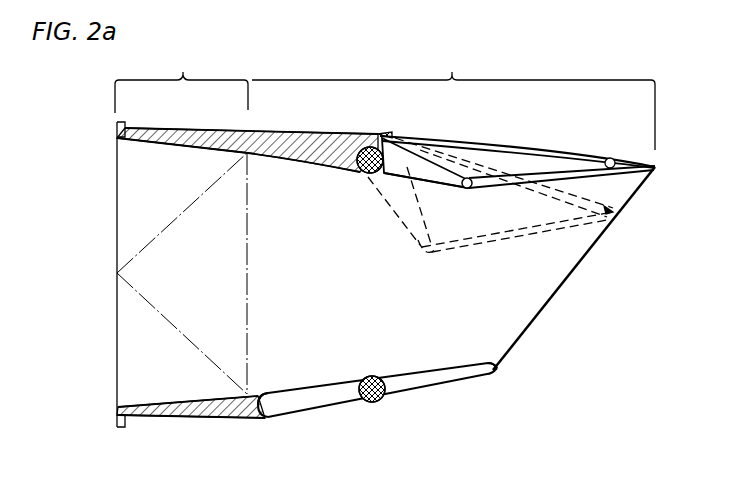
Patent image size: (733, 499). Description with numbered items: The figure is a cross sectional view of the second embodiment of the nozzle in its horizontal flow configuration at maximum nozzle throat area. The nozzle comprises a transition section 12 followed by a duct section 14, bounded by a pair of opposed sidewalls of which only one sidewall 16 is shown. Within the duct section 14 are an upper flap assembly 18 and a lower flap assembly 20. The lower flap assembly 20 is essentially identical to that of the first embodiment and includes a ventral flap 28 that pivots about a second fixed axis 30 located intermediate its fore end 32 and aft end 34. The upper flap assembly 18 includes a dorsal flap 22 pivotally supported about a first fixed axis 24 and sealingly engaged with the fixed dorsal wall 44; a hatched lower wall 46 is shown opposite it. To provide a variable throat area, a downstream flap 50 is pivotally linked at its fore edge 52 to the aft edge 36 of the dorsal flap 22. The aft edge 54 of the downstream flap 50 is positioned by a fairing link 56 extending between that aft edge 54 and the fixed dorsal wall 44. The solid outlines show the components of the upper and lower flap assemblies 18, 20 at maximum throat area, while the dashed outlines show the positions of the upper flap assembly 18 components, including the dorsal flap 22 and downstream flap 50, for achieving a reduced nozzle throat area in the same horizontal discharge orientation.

The transition section 12 is at (181, 82).
The duct section 14 is at (453, 102).
The sidewall 16 is at (496, 293).
The upper flap assembly 18 is at (516, 141).
The lower flap assembly 20 is at (333, 413).
The dorsal flap 22 is at (441, 180).
The first fixed axis 24 is at (358, 174).
The ventral flap 28 is at (415, 385).
The second fixed axis 30 is at (379, 376).
The fore end 32 is at (258, 394).
The aft end 34 is at (492, 364).
The aft edge 36 is at (457, 191).
The fixed dorsal wall 44 is at (322, 135).
The lower wall 46 is at (217, 415).
The downstream flap 50 is at (547, 171).
The fore edge 52 is at (475, 188).
The aft edge 54 is at (635, 168).
The fairing link 56 is at (505, 141).